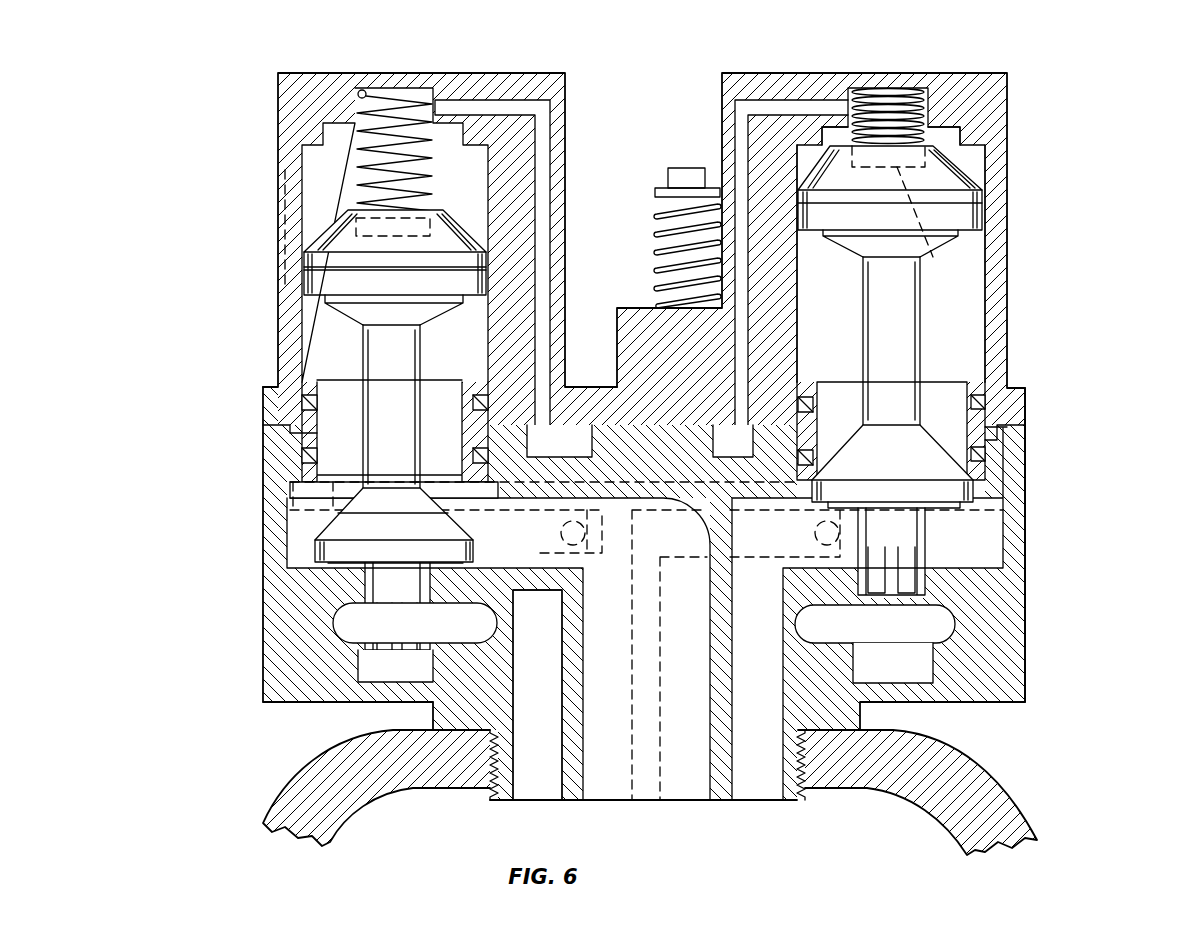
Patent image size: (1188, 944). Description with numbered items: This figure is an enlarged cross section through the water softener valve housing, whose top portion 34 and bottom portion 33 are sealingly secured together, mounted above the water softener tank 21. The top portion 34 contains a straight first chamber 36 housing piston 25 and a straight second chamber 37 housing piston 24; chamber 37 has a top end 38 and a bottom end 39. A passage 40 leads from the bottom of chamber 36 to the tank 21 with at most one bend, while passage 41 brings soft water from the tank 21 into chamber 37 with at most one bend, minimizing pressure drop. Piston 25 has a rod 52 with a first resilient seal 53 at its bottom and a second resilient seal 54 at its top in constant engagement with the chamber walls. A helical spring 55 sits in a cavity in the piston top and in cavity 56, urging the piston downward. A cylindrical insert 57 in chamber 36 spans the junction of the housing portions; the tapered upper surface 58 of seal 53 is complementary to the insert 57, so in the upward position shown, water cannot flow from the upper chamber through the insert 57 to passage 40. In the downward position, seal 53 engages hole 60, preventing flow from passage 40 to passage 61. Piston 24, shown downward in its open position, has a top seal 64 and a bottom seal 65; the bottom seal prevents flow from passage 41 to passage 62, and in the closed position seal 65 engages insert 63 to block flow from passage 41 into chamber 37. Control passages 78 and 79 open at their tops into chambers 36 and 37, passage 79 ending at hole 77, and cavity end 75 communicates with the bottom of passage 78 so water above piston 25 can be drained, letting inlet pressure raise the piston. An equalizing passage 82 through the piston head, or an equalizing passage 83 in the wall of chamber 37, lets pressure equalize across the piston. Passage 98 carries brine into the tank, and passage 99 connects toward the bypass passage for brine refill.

The water softener tank 21 is at (1000, 803).
The piston 24 is at (318, 240).
The piston 25 is at (953, 178).
The bottom portion 33 is at (1013, 473).
The top portion 34 is at (1010, 300).
The first chamber 36 is at (975, 160).
The second chamber 37 is at (462, 188).
The top end 38 is at (310, 147).
The bottom end 39 is at (325, 493).
The passage 40 is at (897, 600).
The passage 41 is at (537, 695).
The rod 52 is at (905, 320).
The first resilient seal 53 is at (820, 480).
The second resilient seal 54 is at (985, 220).
The helical spring 55 is at (920, 110).
The cavity 56 is at (920, 93).
The cylindrical insert 57 is at (940, 428).
The upper surface 58 is at (813, 484).
The hole 60 is at (883, 630).
The passage 61 is at (930, 660).
The passage 62 is at (347, 623).
The insert 63 is at (340, 398).
The top seal 64 is at (318, 281).
The bottom seal 65 is at (335, 547).
The end 75 is at (733, 445).
The hole 77 is at (566, 444).
The passage 78 is at (742, 150).
The passage 79 is at (542, 177).
The equalizing passage 82 is at (1010, 253).
The equalizing passage 83 is at (287, 177).
The passage 98 is at (768, 580).
The passage 99 is at (543, 547).